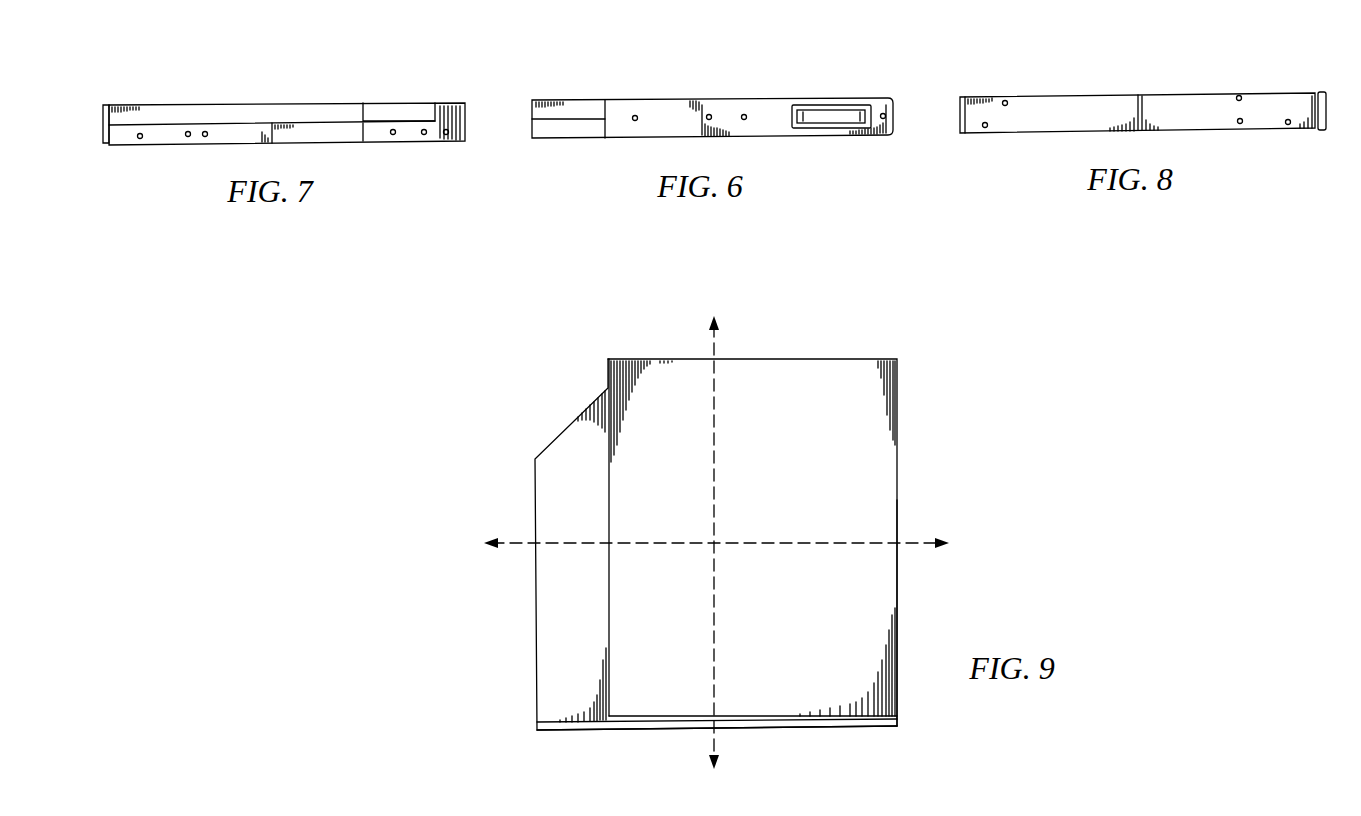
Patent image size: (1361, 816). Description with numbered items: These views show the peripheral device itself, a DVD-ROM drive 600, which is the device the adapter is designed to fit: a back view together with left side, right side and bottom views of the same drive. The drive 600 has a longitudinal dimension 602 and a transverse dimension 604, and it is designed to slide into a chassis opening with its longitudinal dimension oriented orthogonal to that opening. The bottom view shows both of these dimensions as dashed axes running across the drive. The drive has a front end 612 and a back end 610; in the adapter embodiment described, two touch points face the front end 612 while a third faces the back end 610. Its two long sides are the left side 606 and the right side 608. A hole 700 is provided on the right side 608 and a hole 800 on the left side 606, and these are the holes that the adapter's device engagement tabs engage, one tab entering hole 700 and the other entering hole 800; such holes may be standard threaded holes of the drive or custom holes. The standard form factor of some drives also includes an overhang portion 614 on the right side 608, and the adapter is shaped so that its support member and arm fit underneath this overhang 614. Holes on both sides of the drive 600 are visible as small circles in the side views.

In FIG. 7, the DVD-ROM drive 600 is at (197, 84).
In FIG. 6, the DVD-ROM drive 600 is at (762, 72).
In FIG. 8, the DVD-ROM drive 600 is at (1175, 70).
In FIG. 9, the DVD-ROM drive 600 is at (963, 373).
In FIG. 9, the longitudinal dimension 602 is at (715, 432).
In FIG. 9, the transverse dimension 604 is at (793, 545).
In FIG. 6, the left side 606 is at (897, 125).
In FIG. 8, the left side 606 is at (1072, 105).
In FIG. 9, the left side 606 is at (898, 483).
In FIG. 7, the right side 608 is at (370, 135).
In FIG. 6, the right side 608 is at (603, 128).
In FIG. 9, the right side 608 is at (607, 498).
In FIG. 7, the back end 610 is at (468, 108).
In FIG. 6, the back end 610 is at (662, 100).
In FIG. 8, the back end 610 is at (958, 105).
In FIG. 9, the back end 610 is at (652, 360).
In FIG. 7, the front end 612 is at (101, 118).
In FIG. 8, the front end 612 is at (1327, 118).
In FIG. 9, the front end 612 is at (630, 730).
In FIG. 6, the overhang portion 614 is at (603, 85).
In FIG. 9, the overhang portion 614 is at (550, 612).
In FIG. 7, the hole 700 is at (185, 137).
In FIG. 8, the hole 800 is at (1240, 98).